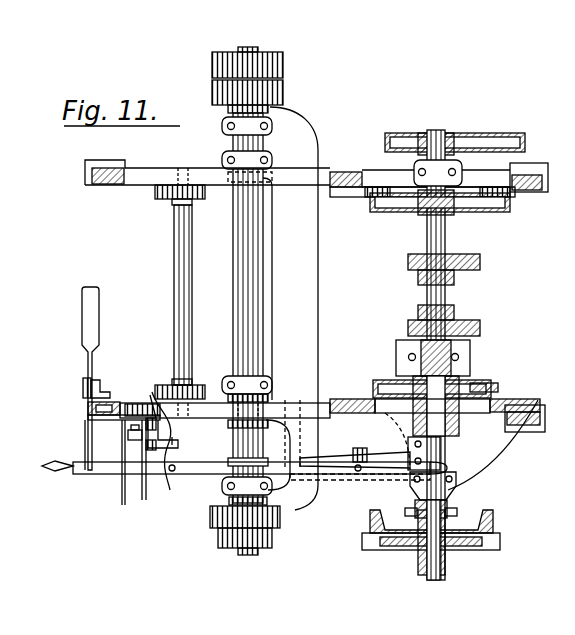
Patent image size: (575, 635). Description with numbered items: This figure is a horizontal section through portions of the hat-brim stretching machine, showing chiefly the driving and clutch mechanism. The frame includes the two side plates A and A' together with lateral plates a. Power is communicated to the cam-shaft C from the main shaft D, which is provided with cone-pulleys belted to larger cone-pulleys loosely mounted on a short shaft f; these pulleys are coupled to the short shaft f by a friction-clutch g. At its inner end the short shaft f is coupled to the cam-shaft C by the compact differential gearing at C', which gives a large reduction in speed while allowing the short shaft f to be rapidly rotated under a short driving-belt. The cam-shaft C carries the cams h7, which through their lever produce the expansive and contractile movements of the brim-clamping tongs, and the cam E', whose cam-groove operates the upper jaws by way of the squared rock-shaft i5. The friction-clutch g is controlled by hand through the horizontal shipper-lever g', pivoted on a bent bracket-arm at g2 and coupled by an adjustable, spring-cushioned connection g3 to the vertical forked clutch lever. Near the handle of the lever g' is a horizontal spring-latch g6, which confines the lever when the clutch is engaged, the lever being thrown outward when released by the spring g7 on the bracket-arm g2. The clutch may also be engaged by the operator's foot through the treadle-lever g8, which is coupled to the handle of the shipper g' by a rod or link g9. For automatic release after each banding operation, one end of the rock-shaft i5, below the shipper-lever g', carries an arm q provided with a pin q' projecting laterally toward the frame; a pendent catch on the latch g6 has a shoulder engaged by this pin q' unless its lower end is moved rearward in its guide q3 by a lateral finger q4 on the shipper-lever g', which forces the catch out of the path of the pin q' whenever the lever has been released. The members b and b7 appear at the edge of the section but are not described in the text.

The main shaft D is at (264, 301).
The side plate A is at (316, 171).
The side plate A' is at (332, 397).
The lateral plate a is at (455, 135).
The cam-shaft C is at (433, 355).
The differential gearing C' is at (455, 430).
The cam E' is at (440, 210).
The cams h7 is at (454, 294).
The frame member b is at (570, 212).
The frame member b7 is at (564, 239).
The squared rock-shaft i5 is at (174, 280).
The treadle-lever g8 is at (87, 362).
The rod or link g9 is at (87, 433).
The hand shipper or lever g' is at (243, 481).
The bent bracket-arm g2 is at (359, 478).
The adjustable and cushioned or spring connection g3 is at (452, 482).
The horizontal spring-latch g6 is at (144, 483).
The spring g7 is at (303, 461).
The friction-clutch g is at (431, 536).
The short shaft f is at (431, 548).
The arm q is at (172, 453).
The pin q' is at (177, 441).
The guide q3 is at (128, 438).
The lateral finger q4 is at (160, 415).